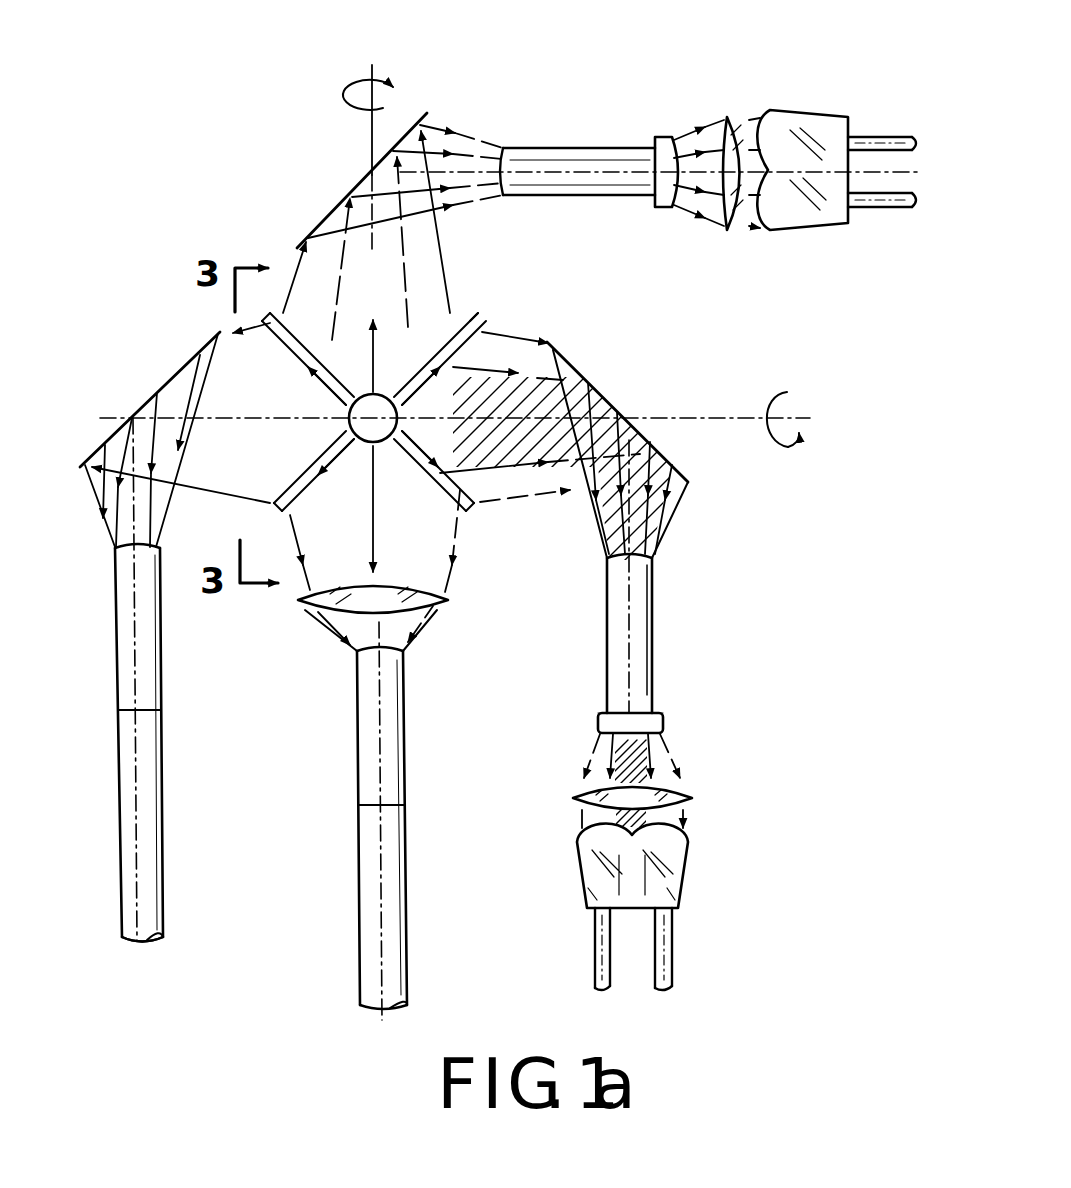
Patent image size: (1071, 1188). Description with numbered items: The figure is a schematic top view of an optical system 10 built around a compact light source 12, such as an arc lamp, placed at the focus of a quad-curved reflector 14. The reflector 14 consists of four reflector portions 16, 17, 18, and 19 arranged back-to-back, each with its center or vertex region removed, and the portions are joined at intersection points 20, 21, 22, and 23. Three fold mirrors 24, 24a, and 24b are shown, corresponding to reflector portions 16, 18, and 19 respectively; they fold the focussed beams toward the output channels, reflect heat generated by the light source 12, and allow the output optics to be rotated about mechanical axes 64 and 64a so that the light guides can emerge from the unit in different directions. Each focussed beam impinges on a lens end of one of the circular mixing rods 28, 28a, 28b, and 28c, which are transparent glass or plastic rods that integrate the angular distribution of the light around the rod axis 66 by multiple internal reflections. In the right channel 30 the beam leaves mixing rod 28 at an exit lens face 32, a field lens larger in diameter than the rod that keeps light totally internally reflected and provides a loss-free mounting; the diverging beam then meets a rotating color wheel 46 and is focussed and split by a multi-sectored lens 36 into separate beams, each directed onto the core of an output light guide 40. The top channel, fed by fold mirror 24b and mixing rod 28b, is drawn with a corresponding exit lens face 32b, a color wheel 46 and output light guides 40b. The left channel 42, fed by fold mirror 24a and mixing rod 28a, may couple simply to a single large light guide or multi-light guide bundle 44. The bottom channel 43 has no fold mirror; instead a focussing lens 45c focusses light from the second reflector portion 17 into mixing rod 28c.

The optical system 10 is at (230, 236).
The compact light source 12 is at (347, 427).
The quad-curved reflector 14 is at (484, 303).
The reflector portion 16 is at (460, 533).
The second reflector portion 17 is at (279, 560).
The reflector portion 18 is at (266, 325).
The reflector portion 19 is at (456, 315).
The intersection point 20 is at (450, 334).
The intersection point 21 is at (290, 330).
The intersection point 22 is at (285, 500).
The intersection point 23 is at (470, 508).
The fold mirror 24 is at (608, 397).
The fold mirror 24a is at (183, 364).
The fold mirror 24b is at (410, 127).
The circular mixing rod 28 is at (654, 622).
The circular mixing rod 28a is at (160, 650).
The circular mixing rod 28b is at (603, 142).
The circular mixing rod 28c is at (400, 757).
The right channel 30 is at (555, 722).
The exit lens face 32 is at (663, 722).
The collar 32b is at (670, 136).
The multi-sectored lens 36 is at (694, 865).
The output light guide 40 is at (595, 955).
The lamp pin 40b is at (885, 137).
The left channel 42 is at (180, 812).
The bottom channel 43 is at (337, 770).
The multi-light guide bundle 44 is at (163, 872).
The focussing lens 45c is at (443, 608).
The rotating color wheel 46 is at (734, 120).
The mechanical axis 64 is at (728, 418).
The mechanical axis 64a is at (368, 138).
The rod axis 66 is at (635, 683).